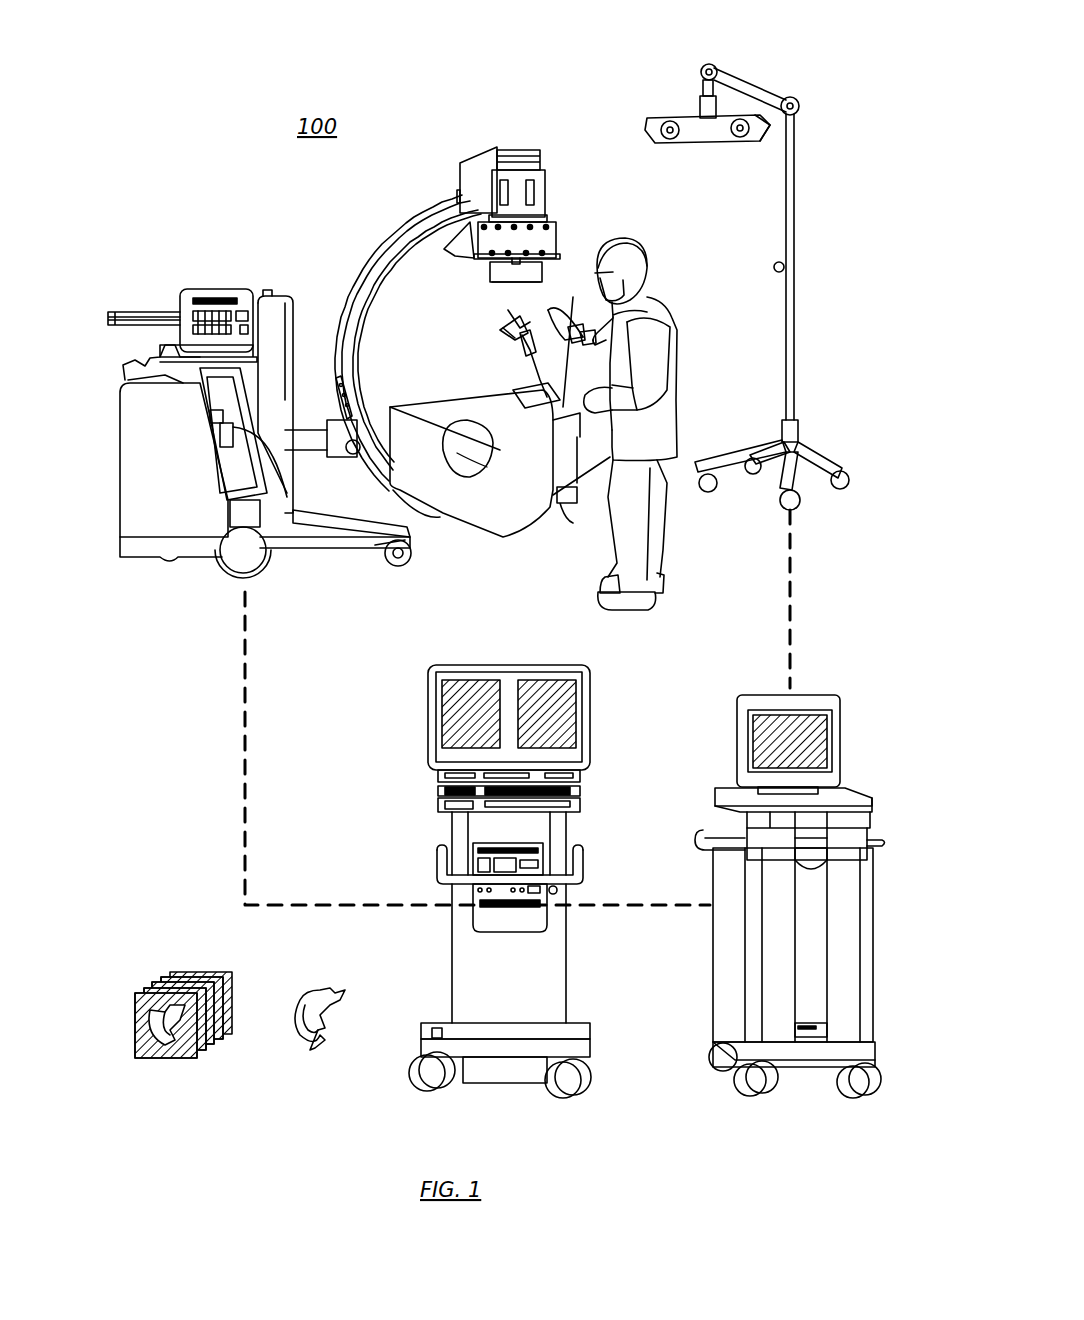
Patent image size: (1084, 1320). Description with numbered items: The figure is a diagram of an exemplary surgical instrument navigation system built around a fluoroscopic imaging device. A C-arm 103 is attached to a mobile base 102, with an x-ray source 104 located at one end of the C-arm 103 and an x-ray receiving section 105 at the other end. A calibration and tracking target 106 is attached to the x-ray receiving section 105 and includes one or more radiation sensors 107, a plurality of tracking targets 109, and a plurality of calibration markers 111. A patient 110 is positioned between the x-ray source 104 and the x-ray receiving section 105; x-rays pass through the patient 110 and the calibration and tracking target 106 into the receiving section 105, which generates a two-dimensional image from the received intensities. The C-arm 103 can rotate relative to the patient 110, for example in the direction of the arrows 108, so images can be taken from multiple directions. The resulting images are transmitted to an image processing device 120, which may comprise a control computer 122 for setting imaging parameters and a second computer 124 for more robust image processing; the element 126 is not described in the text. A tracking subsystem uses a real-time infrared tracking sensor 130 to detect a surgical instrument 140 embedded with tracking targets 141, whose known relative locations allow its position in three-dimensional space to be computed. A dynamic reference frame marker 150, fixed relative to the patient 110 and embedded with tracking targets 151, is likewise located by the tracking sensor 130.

The mobile base 102 is at (110, 500).
The C-arm 103 is at (340, 302).
The x-ray source 104 is at (557, 527).
The x-ray receiving section 105 is at (548, 190).
The calibration and tracking target 106 is at (558, 240).
The radiation sensors 107 is at (487, 268).
The arrows 108 is at (390, 208).
The tracking targets 109 is at (439, 242).
The patient 110 is at (448, 475).
The calibration markers 111 is at (497, 284).
The image processing device 120 is at (870, 1100).
The control computer 122 is at (566, 830).
The second computer 124 is at (710, 935).
The anatomical model 126 is at (312, 1052).
The infrared tracking sensor 130 is at (655, 118).
The surgical instrument 140 is at (500, 460).
The tracking targets 141 is at (557, 346).
The dynamic reference frame marker 150 is at (530, 380).
The tracking targets 151 is at (510, 338).